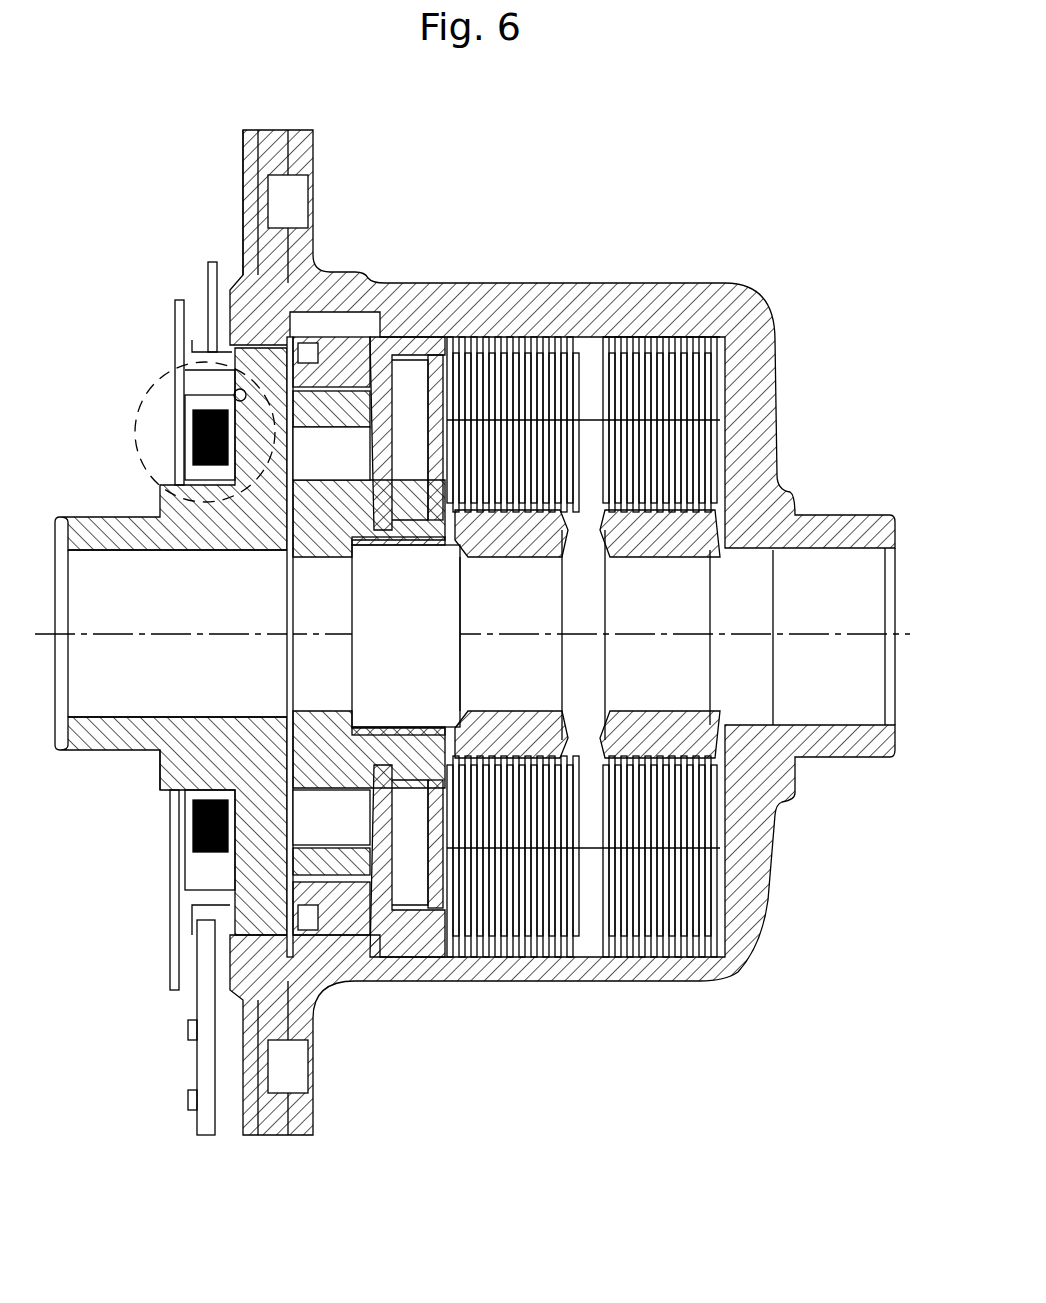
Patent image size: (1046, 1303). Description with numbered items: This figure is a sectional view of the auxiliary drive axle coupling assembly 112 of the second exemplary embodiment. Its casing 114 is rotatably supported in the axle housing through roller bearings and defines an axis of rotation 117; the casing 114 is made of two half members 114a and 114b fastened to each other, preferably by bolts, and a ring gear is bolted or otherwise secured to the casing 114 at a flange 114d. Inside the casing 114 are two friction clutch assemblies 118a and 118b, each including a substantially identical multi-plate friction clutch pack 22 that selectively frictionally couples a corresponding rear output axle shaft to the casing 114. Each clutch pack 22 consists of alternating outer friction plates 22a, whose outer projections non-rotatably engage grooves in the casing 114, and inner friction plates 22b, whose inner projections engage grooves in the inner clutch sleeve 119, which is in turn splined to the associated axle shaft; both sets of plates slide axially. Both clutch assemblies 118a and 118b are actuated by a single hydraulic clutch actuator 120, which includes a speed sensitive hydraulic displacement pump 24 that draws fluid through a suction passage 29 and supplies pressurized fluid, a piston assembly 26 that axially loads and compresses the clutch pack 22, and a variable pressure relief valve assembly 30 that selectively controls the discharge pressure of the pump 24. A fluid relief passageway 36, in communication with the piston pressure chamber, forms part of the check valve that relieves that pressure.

The auxiliary drive axle coupling assembly 112 is at (421, 195).
The casing 114 is at (780, 384).
The half member 114a is at (172, 750).
The half member 114b is at (762, 892).
The flange 114d is at (315, 1135).
The axis of rotation 117 is at (133, 632).
The friction clutch assembly 118a is at (506, 322).
The friction clutch assembly 118b is at (678, 318).
The inner clutch sleeve 119 is at (518, 720).
The hydraulic clutch actuator 120 is at (262, 318).
The clutch pack 22 is at (540, 337).
The outer friction plates 22a is at (470, 957).
The inner friction plates 22b is at (475, 515).
The hydraulic displacement pump 24 is at (279, 522).
The piston assembly 26 is at (411, 545).
The suction passage 29 is at (243, 925).
The variable pressure relief valve assembly 30 is at (146, 393).
The fluid relief passageway 36 is at (257, 390).